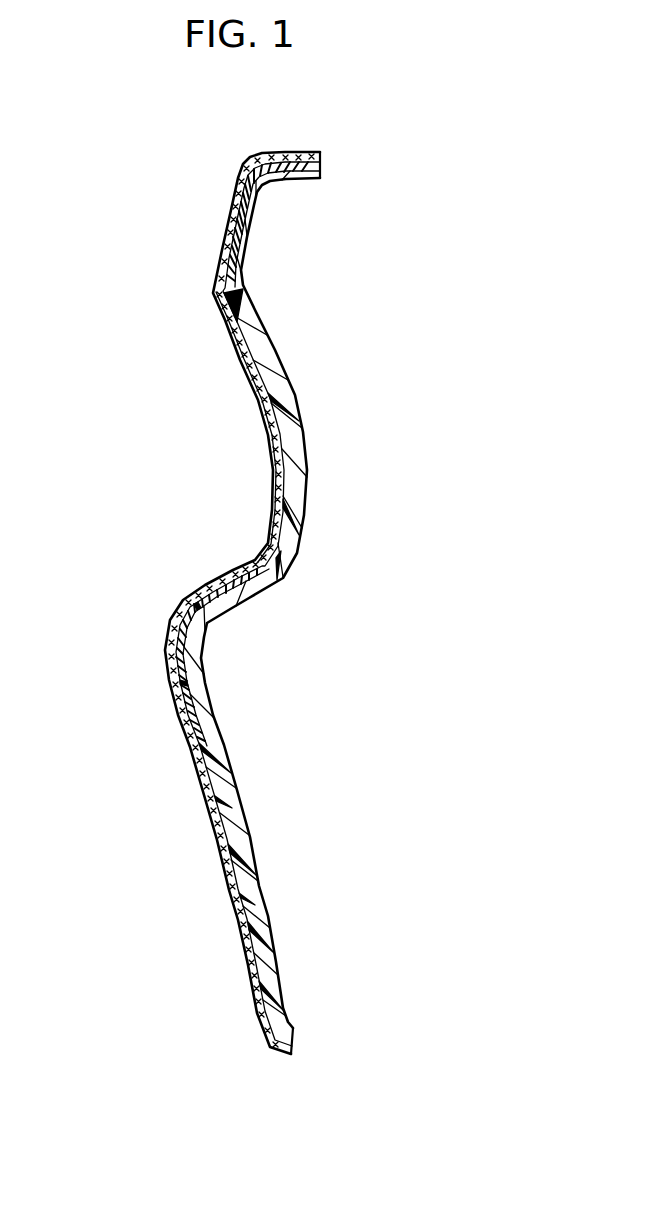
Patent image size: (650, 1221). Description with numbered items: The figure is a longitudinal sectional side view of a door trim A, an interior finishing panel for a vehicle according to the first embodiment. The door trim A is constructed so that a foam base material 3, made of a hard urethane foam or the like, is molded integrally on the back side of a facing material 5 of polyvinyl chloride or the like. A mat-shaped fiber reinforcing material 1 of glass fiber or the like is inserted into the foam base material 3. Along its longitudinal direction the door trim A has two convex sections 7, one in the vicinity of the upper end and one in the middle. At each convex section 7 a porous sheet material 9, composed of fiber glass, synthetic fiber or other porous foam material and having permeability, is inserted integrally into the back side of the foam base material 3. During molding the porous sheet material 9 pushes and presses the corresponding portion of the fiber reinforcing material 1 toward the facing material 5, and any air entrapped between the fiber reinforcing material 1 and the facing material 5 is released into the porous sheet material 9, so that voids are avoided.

The door trim A is at (133, 337).
The fiber reinforcing material 1 is at (247, 318).
The foam base material 3 is at (287, 400).
The facing material 5 is at (237, 342).
The convex section 7 is at (230, 207).
The porous sheet material 9 is at (253, 233).